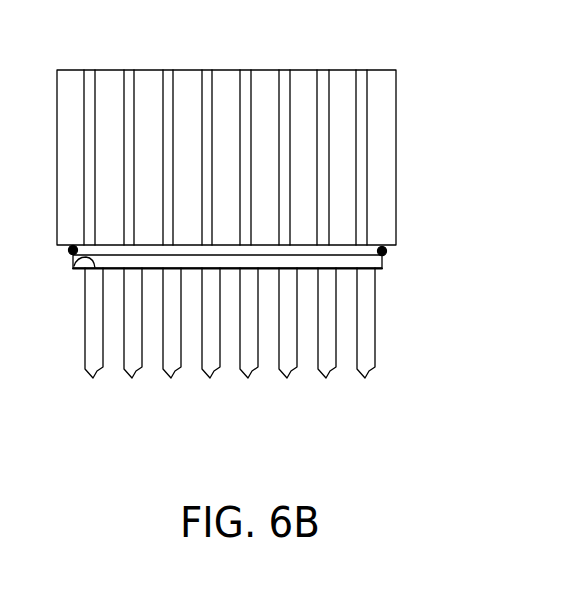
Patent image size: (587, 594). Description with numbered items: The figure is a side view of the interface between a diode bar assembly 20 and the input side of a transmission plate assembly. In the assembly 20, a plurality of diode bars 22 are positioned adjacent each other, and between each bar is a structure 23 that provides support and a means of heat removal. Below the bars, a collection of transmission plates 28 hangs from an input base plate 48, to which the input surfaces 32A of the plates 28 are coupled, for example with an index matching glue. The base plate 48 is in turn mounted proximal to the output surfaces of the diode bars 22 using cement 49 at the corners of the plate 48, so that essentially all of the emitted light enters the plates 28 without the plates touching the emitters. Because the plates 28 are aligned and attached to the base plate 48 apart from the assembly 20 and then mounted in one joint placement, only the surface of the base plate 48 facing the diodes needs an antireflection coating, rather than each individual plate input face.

The diode bar assembly 20 is at (290, 64).
The diode bar 22 is at (130, 69).
The support structure 23 is at (188, 69).
The transmission plate 28 is at (140, 372).
The input surface 32A is at (72, 263).
The input base plate 48 is at (386, 258).
The cement 49 is at (67, 251).